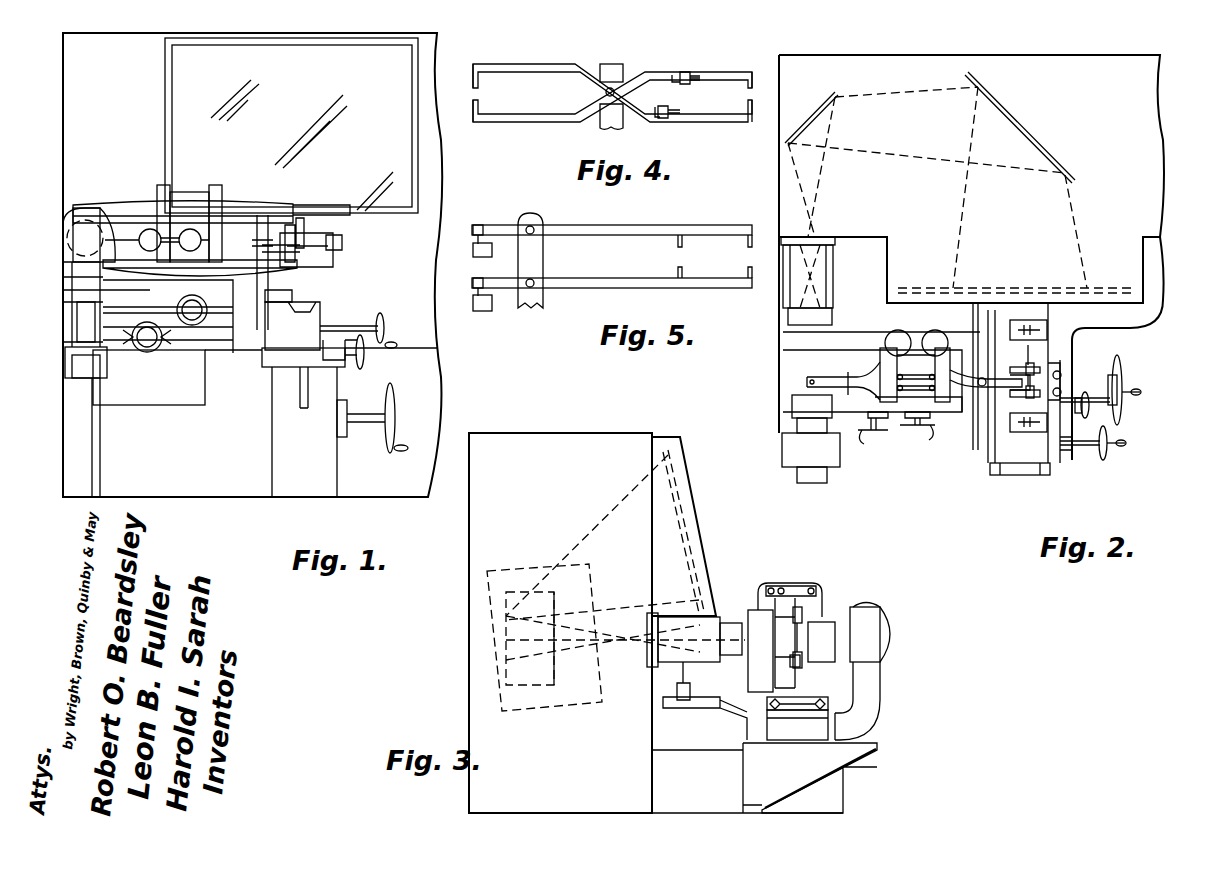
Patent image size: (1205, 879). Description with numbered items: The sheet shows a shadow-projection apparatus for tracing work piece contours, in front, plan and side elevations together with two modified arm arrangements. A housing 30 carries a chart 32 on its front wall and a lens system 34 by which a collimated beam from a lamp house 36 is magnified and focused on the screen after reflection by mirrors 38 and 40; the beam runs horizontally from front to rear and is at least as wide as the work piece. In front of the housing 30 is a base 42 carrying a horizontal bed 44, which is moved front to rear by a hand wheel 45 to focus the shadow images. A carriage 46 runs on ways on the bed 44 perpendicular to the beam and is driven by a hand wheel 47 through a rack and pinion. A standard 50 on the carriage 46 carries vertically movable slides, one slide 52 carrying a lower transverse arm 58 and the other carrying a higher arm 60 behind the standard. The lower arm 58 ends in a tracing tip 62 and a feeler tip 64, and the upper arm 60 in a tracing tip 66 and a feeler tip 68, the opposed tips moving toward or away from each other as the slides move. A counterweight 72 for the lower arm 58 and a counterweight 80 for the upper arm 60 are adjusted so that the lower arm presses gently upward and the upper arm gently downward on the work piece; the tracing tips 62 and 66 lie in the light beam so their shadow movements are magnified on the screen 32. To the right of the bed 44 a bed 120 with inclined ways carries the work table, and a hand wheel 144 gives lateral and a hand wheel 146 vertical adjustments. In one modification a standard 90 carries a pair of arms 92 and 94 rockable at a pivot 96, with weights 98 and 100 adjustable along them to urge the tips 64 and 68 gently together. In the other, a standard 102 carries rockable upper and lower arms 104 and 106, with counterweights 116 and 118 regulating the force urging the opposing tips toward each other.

In FIG. 2, the housing 30 is at (778, 182).
In FIG. 3, the housing 30 is at (577, 440).
In FIG. 1, the chart 32 is at (187, 58).
In FIG. 2, the chart 32 is at (1105, 288).
In FIG. 3, the chart 32 is at (712, 545).
In FIG. 2, the lens system 34 is at (790, 300).
In FIG. 3, the lens system 34 is at (708, 662).
In FIG. 1, the lamp house 36 is at (68, 260).
In FIG. 2, the lamp house 36 is at (800, 455).
In FIG. 3, the lamp house 36 is at (878, 606).
In FIG. 2, the mirror 38 is at (813, 105).
In FIG. 3, the mirror 38 is at (506, 640).
In FIG. 2, the mirror 40 is at (1040, 135).
In FIG. 3, the mirror 40 is at (520, 568).
In FIG. 1, the base 42 is at (67, 333).
In FIG. 3, the base 42 is at (805, 782).
In FIG. 1, the horizontal bed 44 is at (65, 313).
In FIG. 3, the horizontal bed 44 is at (805, 730).
In FIG. 1, the hand wheel 45 is at (152, 352).
In FIG. 2, the hand wheel 45 is at (877, 437).
In FIG. 1, the carriage 46 is at (65, 300).
In FIG. 3, the carriage 46 is at (828, 700).
In FIG. 1, the hand wheel 47 is at (262, 300).
In FIG. 2, the hand wheel 47 is at (927, 435).
In FIG. 1, the standard 50 is at (157, 193).
In FIG. 1, the slide 52 is at (192, 195).
In FIG. 1, the transverse arm 58 is at (132, 264).
In FIG. 3, the transverse arm 58 is at (805, 667).
In FIG. 1, the arm 60 is at (120, 207).
In FIG. 2, the arm 60 is at (838, 375).
In FIG. 3, the arm 60 is at (785, 600).
In FIG. 4, the tracing tip 62 is at (473, 103).
In FIG. 5, the tracing tip 62 is at (677, 269).
In FIG. 4, the feeler tip 64 is at (748, 103).
In FIG. 5, the feeler tip 64 is at (752, 276).
In FIG. 4, the tracing tip 66 is at (473, 85).
In FIG. 5, the tracing tip 66 is at (692, 248).
In FIG. 4, the feeler tip 68 is at (748, 87).
In FIG. 5, the feeler tip 68 is at (757, 238).
In FIG. 2, the counterweight 72 is at (950, 322).
In FIG. 2, the counterweight 80 is at (897, 332).
In FIG. 3, the counterweight 80 is at (752, 608).
In FIG. 4, the standard 90 is at (615, 66).
In FIG. 4, the arm 92 is at (551, 63).
In FIG. 4, the arm 94 is at (518, 122).
In FIG. 4, the rocking pivot 96 is at (606, 93).
In FIG. 4, the weight 98 is at (683, 72).
In FIG. 4, the weight 100 is at (661, 118).
In FIG. 5, the standard 102 is at (536, 216).
In FIG. 5, the upper arm 104 is at (622, 226).
In FIG. 5, the lower arm 106 is at (585, 280).
In FIG. 5, the counterweight 116 is at (473, 252).
In FIG. 5, the counterweight 118 is at (473, 308).
In FIG. 1, the bed 120 is at (278, 330).
In FIG. 2, the bed 120 is at (990, 466).
In FIG. 1, the hand wheel 144 is at (365, 360).
In FIG. 2, the hand wheel 144 is at (1086, 393).
In FIG. 1, the hand wheel 146 is at (395, 438).
In FIG. 2, the hand wheel 146 is at (1127, 372).